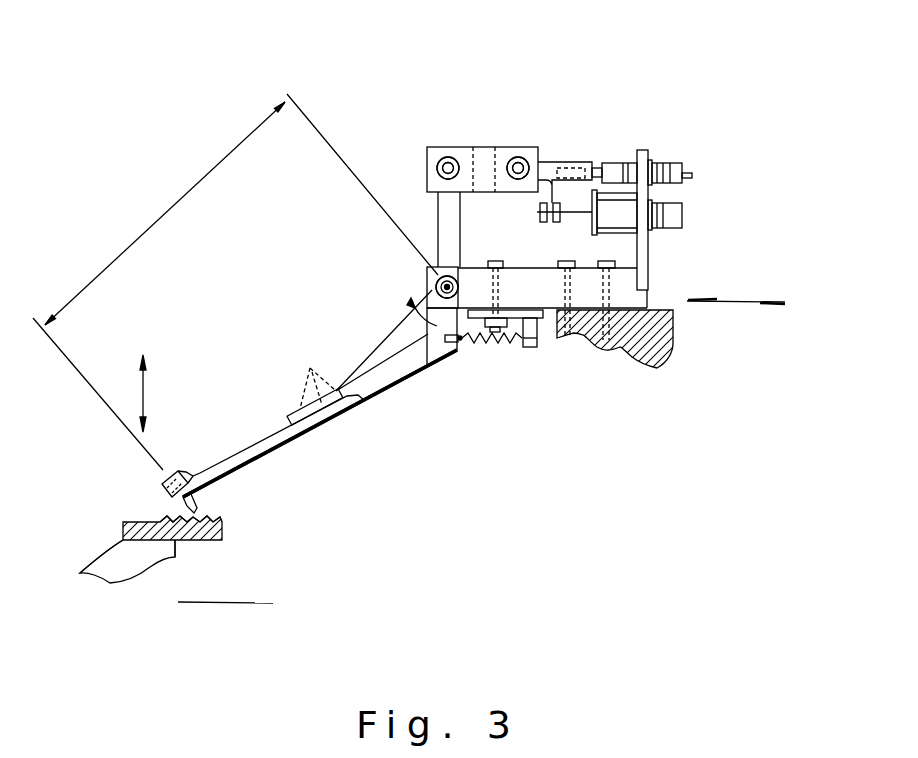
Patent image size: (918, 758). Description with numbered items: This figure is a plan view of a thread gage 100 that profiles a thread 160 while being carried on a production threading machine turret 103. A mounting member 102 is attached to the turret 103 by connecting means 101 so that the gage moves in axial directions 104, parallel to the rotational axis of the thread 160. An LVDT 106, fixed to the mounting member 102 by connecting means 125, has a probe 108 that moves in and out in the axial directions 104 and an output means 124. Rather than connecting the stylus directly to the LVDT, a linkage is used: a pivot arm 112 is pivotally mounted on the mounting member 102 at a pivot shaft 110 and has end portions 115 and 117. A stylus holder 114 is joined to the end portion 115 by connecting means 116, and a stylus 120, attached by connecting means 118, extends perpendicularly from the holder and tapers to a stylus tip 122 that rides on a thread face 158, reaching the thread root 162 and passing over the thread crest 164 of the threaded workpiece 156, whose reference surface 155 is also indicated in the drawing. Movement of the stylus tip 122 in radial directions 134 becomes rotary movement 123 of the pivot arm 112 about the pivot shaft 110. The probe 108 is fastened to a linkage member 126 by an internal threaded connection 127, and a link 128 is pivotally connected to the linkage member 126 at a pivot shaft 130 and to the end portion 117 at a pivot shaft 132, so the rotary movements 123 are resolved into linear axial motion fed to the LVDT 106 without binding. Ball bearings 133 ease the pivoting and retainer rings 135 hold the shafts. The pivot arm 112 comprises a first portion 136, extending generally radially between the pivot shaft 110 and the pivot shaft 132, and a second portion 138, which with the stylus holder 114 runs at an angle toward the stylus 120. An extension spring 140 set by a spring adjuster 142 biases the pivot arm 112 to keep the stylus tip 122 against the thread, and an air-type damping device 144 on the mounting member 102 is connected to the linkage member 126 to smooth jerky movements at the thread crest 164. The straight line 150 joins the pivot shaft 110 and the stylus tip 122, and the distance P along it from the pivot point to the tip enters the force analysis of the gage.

The thread gage 100 is at (683, 131).
The connecting means 101 is at (604, 340).
The mounting member 102 is at (524, 268).
The production threading machine turret 103 is at (672, 338).
The axial directions 104 is at (735, 301).
The LVDT 106 is at (672, 169).
The probe 108 is at (598, 168).
The pivot shaft 110 is at (455, 288).
The pivot arm 112 is at (380, 394).
The stylus holder 114 is at (258, 440).
The end portion 115 is at (297, 412).
The connecting means 116 is at (314, 375).
The end portion 117 is at (462, 165).
The connecting means 118 is at (168, 478).
The stylus 120 is at (190, 474).
The stylus tip 122 is at (193, 510).
The rotary movements 123 is at (428, 366).
The output means 124 is at (692, 178).
The connecting means 125 is at (640, 158).
The linkage member 126 is at (552, 162).
The internal threaded connection 127 is at (575, 168).
The link 128 is at (455, 147).
The pivot shaft 130 is at (513, 163).
The pivot shaft 132 is at (445, 160).
The ball bearings 133 is at (520, 158).
The radial directions 134 is at (144, 395).
The retainer rings 135 is at (441, 163).
The first portion 136 is at (460, 229).
The second portion 138 is at (397, 355).
The extension spring 140 is at (492, 341).
The spring adjuster 142 is at (540, 334).
The damping device 144 is at (683, 218).
The straight line 150 is at (253, 466).
The reference surface 155 is at (250, 604).
The sheet 156 is at (105, 577).
The thread face 158 is at (195, 527).
The thread 160 is at (222, 519).
The thread root 162 is at (170, 533).
The thread crest 164 is at (165, 524).
The distance P is at (177, 208).